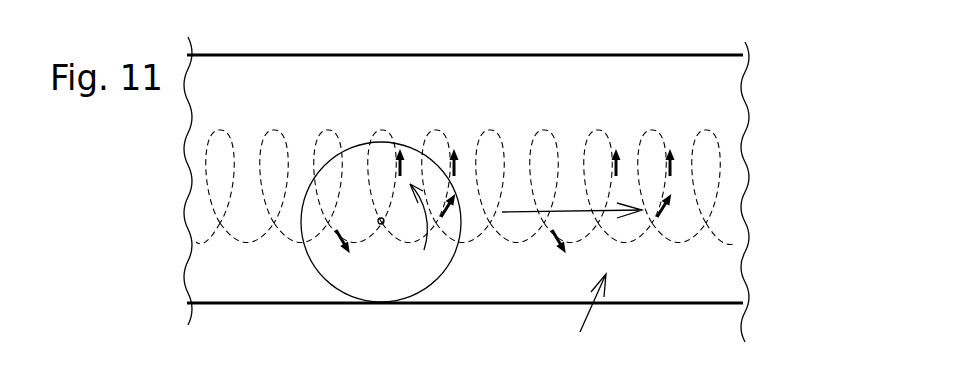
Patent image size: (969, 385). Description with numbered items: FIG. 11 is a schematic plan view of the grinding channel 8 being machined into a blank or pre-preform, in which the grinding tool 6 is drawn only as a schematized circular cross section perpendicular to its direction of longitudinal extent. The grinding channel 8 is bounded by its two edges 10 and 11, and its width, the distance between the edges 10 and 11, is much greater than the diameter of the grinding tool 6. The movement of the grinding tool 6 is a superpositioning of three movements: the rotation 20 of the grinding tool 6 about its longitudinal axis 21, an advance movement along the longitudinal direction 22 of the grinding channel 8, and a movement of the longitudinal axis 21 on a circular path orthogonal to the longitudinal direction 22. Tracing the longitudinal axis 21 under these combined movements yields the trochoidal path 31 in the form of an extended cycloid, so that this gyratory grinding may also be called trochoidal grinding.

The grinding tool 6 is at (340, 270).
The grinding channel 8 is at (586, 320).
The edge of the grinding channel 10 is at (637, 303).
The edge of the grinding channel 11 is at (720, 55).
The rotation 20 is at (421, 228).
The longitudinal axis 21 is at (380, 224).
The longitudinal direction 22 is at (570, 212).
The trochoidal path 31 is at (698, 190).